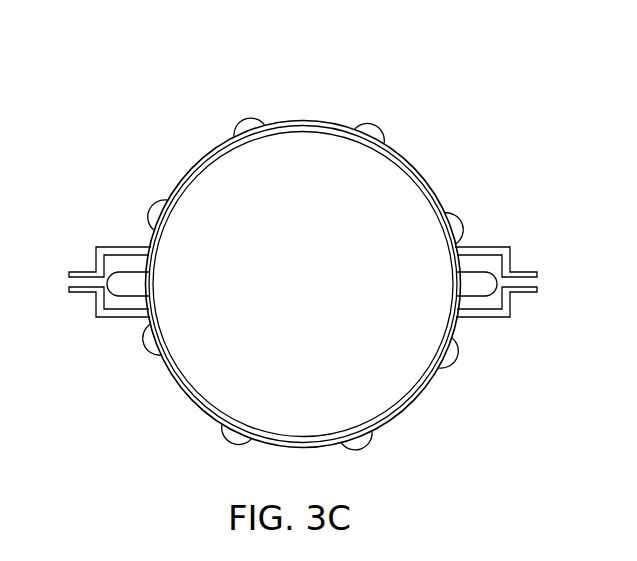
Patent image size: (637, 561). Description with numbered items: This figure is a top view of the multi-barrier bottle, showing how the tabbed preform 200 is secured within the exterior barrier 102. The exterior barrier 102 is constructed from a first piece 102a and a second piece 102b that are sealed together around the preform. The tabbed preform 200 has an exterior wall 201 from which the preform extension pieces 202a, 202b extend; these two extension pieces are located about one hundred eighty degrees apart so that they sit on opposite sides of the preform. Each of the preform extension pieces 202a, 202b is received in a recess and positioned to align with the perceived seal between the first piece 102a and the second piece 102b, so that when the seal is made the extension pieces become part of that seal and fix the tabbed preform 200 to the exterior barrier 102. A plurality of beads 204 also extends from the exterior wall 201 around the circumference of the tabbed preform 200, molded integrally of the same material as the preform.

The exterior barrier 102 is at (305, 232).
The first piece 102a is at (423, 388).
The second piece 102b is at (311, 121).
The tabbed preform 200 is at (315, 436).
The exterior wall 201 is at (428, 193).
The preform extension piece 202a is at (485, 283).
The preform extension piece 202b is at (115, 278).
The beads 204 is at (370, 138).